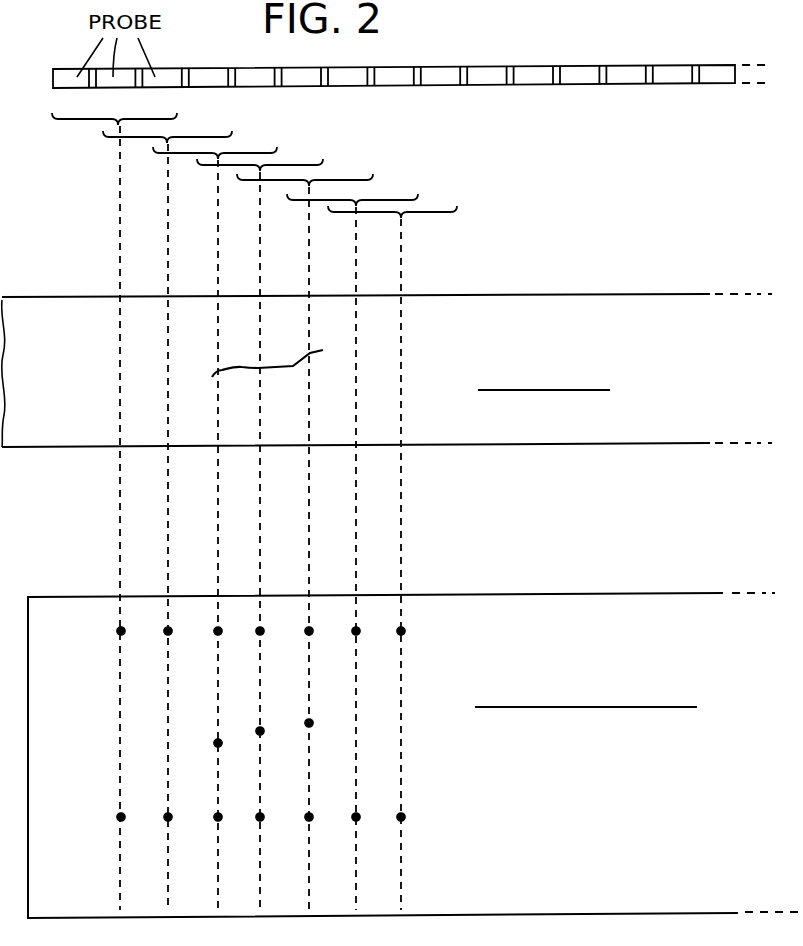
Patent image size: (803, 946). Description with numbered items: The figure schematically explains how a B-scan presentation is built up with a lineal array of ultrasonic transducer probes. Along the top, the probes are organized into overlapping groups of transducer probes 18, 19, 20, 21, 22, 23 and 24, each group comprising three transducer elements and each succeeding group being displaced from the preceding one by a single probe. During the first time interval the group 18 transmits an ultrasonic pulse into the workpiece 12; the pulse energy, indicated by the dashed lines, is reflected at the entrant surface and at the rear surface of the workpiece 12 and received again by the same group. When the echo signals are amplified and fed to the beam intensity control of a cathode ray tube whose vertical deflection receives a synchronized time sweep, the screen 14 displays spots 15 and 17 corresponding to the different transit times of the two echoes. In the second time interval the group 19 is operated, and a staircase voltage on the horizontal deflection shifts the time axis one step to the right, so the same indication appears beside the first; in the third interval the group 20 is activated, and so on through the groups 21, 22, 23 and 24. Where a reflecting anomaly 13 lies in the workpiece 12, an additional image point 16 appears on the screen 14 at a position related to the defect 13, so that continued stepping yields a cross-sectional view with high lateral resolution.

The workpiece 12 is at (593, 300).
The anomaly 13 is at (280, 367).
The screen 14 is at (628, 600).
The spot 15 is at (121, 631).
The image point 16 is at (218, 743).
The spot 17 is at (121, 817).
The group of transducer probes 18 is at (127, 119).
The group of transducer probes 19 is at (205, 136).
The group of transducer probes 20 is at (253, 153).
The group of transducer probes 21 is at (302, 165).
The group of transducer probes 22 is at (343, 180).
The group of transducer probes 23 is at (387, 200).
The group of transducer probes 24 is at (437, 212).